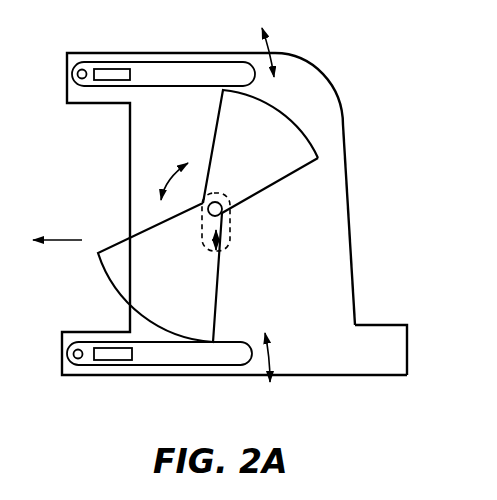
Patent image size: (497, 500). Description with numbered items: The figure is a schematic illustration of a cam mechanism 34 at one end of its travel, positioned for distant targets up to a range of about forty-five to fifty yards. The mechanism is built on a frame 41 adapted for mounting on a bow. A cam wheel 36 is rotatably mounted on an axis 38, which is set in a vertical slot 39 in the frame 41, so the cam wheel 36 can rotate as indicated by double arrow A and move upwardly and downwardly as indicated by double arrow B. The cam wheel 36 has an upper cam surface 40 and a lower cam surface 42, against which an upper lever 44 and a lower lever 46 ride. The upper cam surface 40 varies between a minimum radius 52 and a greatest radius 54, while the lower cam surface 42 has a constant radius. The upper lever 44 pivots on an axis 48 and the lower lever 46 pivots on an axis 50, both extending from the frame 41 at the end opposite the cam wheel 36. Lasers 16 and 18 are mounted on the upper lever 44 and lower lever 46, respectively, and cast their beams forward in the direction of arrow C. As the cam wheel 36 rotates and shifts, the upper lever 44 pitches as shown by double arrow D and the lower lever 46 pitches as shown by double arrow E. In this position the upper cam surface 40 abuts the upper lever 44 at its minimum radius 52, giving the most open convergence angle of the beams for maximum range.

The laser 16 is at (118, 68).
The laser 18 is at (128, 362).
The cam mechanism 34 is at (101, 158).
The cam wheel 36 is at (313, 160).
The axis 38 is at (224, 201).
The vertical slot 39 is at (230, 222).
The upper cam surface 40 is at (305, 127).
The frame 41 is at (385, 325).
The lower cam surface 42 is at (100, 269).
The upper lever 44 is at (197, 61).
The lower lever 46 is at (211, 376).
The axis 48 is at (82, 69).
The axis 50 is at (80, 365).
The minimum radius 52 is at (212, 136).
The greatest radius 54 is at (288, 177).
The double arrow A is at (166, 178).
The double arrow B is at (231, 226).
The arrow C is at (60, 240).
The double arrow D is at (277, 47).
The double arrow E is at (275, 357).